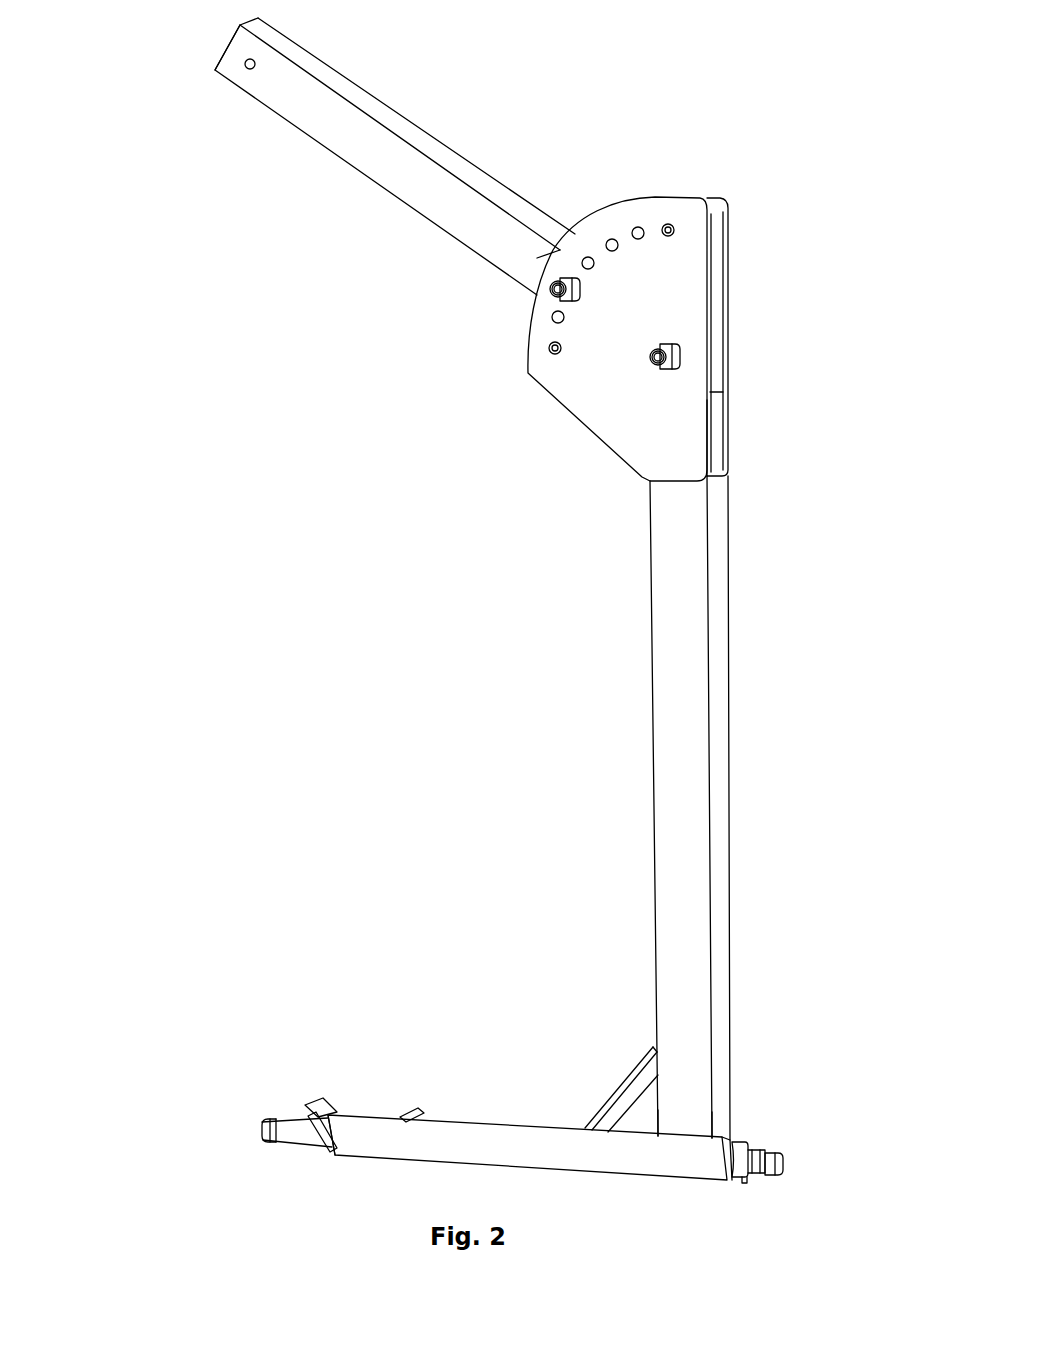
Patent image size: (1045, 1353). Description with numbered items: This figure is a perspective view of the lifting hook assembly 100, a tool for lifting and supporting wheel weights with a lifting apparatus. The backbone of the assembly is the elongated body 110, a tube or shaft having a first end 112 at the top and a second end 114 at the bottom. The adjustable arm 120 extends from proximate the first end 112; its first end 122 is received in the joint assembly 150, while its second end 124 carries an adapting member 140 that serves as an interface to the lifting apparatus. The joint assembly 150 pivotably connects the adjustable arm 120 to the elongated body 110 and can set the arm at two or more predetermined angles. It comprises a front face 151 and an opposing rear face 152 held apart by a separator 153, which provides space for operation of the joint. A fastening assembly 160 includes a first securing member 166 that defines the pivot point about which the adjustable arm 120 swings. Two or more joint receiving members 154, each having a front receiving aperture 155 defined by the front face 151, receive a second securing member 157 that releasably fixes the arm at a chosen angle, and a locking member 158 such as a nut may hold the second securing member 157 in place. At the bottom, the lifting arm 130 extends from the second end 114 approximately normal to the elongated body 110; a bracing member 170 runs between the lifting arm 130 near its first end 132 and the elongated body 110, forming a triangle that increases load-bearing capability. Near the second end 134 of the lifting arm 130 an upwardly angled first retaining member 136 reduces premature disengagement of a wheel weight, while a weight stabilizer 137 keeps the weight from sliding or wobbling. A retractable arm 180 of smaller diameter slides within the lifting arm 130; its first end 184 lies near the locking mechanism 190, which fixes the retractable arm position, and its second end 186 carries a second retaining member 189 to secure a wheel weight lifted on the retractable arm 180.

The lifting hook assembly 100 is at (205, 615).
The elongated body 110 is at (693, 785).
The first end of elongated body 112 is at (712, 403).
The second end of elongated body 114 is at (690, 1132).
The adjustable arm 120 is at (380, 152).
The first end of adjustable arm 122 is at (537, 260).
The second end of adjustable arm 124 is at (215, 70).
The lifting arm 130 is at (475, 1137).
The first end of lifting arm 132 is at (700, 1155).
The second end of lifting arm 134 is at (335, 1148).
The first retaining member 136 is at (320, 1100).
The weight stabilizer 137 is at (408, 1108).
The adapting member 140 is at (245, 58).
The joint assembly 150 is at (650, 323).
The front face 151 is at (690, 258).
The rear face 152 is at (713, 203).
The separator 153 is at (712, 367).
The joint receiving member 154 is at (667, 226).
The front receiving aperture 155 is at (669, 226).
The second securing member 157 is at (550, 290).
The locking member 158 is at (565, 282).
The fastening assembly 160 is at (700, 348).
The first securing member 166 is at (655, 370).
The bracing member 170 is at (630, 1080).
The retractable arm 180 is at (285, 1135).
The first end of retractable arm 184 is at (763, 1143).
The second end of retractable arm 186 is at (265, 1140).
The second retaining member 189 is at (262, 1125).
The locking mechanism 190 is at (806, 1176).